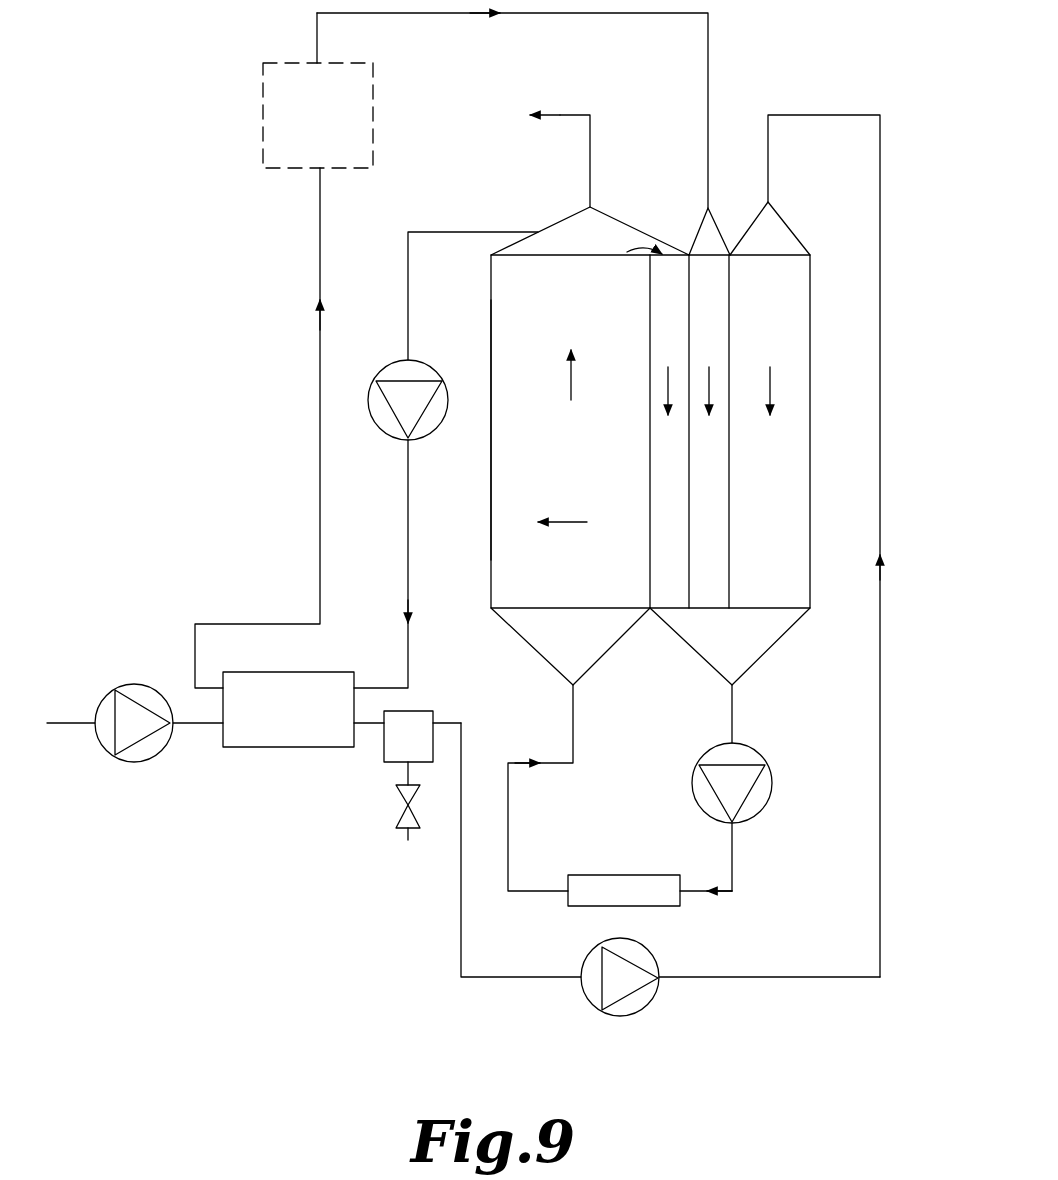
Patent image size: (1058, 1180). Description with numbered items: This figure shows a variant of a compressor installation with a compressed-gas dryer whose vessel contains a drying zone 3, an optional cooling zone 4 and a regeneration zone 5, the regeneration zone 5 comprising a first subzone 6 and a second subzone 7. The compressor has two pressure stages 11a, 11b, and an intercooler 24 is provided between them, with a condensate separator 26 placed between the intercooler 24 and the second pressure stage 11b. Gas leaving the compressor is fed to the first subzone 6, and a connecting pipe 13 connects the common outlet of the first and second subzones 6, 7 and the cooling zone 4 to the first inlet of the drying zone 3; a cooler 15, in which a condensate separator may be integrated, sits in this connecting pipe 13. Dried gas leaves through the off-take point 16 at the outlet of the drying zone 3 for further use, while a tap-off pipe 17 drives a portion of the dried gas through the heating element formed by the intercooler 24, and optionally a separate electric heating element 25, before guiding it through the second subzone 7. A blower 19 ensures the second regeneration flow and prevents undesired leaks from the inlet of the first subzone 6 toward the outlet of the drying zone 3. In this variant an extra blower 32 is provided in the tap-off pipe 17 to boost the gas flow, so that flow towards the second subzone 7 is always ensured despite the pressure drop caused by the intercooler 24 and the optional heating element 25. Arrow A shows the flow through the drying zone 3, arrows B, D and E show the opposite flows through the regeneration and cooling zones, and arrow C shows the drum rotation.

The drying zone 3 is at (540, 475).
The cooling zone 4 is at (672, 462).
The regeneration zone 5 is at (752, 617).
The first subzone 6 is at (797, 298).
The second subzone 7 is at (703, 550).
The first pressure stage 11a is at (128, 750).
The second pressure stage 11b is at (617, 1008).
The connecting pipe 13 is at (733, 870).
The cooler 15 is at (672, 895).
The off-take point 16 is at (590, 207).
The tap-off pipe 17 is at (318, 280).
The blower 19 is at (753, 818).
The intercooler 24 is at (276, 732).
The electric heating element 25 is at (283, 95).
The condensate separator 26 is at (390, 745).
The extra blower 32 is at (400, 377).